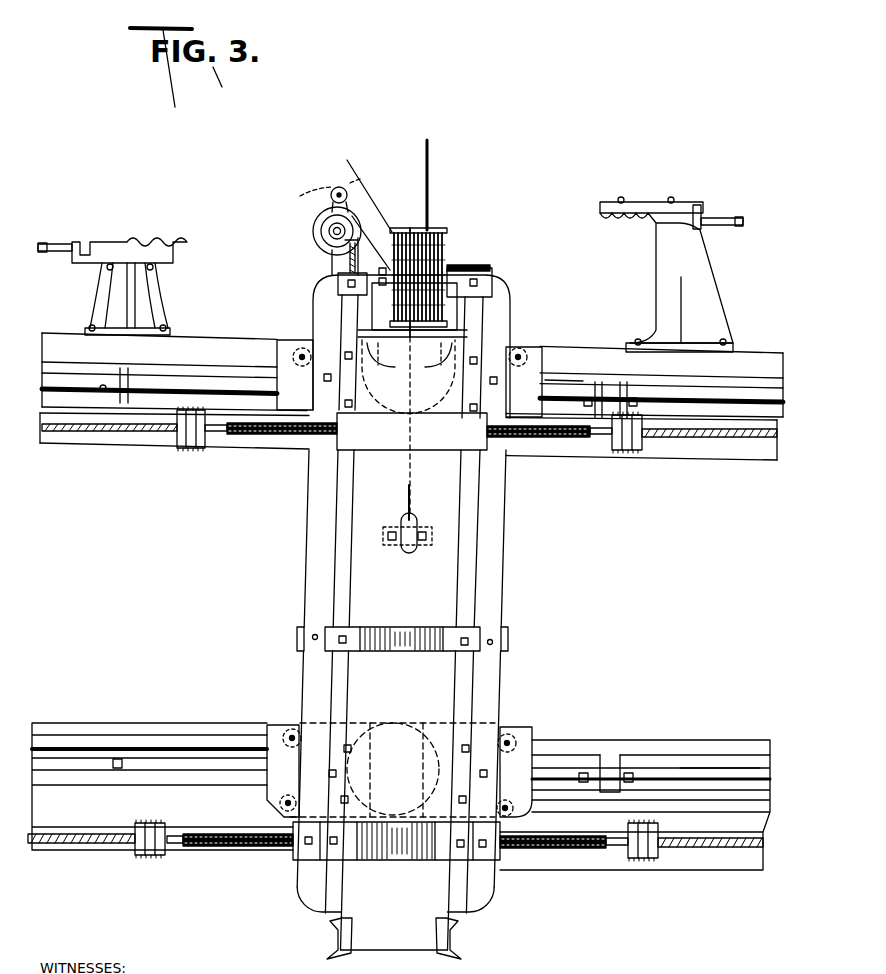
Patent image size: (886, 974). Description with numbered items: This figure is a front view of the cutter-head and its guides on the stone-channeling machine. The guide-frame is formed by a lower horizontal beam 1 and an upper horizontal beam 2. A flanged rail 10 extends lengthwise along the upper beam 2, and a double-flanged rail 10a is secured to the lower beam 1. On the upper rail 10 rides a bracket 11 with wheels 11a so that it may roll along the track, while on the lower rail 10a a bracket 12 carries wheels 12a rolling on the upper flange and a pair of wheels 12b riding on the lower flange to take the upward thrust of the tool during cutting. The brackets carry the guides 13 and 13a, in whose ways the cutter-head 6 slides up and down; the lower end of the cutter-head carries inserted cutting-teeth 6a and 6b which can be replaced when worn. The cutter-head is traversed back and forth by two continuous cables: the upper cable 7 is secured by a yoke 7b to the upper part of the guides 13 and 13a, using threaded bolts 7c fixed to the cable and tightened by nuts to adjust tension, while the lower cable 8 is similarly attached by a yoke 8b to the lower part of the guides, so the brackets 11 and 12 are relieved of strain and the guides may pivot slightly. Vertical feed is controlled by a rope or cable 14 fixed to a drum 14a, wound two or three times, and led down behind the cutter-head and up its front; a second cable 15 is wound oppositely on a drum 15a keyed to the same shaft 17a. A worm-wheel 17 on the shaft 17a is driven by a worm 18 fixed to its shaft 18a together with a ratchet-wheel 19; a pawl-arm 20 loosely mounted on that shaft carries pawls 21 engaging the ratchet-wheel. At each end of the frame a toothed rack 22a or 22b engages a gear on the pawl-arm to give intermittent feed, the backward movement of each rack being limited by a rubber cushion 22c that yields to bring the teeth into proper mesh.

The lower horizontal beam 1 is at (720, 862).
The upper horizontal beam 2 is at (752, 366).
The cutter-head 6 is at (402, 700).
The cutting-tooth 6a is at (450, 942).
The cutting-tooth 6b is at (416, 526).
The upper cable 7 is at (105, 442).
The yoke 7b is at (412, 431).
The threaded bolts 7c is at (282, 445).
The lower cable 8 is at (108, 843).
The yoke 8b is at (456, 851).
The flanged rail 10 is at (558, 382).
The double-flanged rail 10a is at (742, 768).
The bracket 11 is at (279, 333).
The wheels 11a is at (300, 345).
The bracket 12 is at (526, 750).
The wheels 12a is at (290, 733).
The wheels 12b is at (284, 806).
The guide 13 is at (490, 544).
The guide 13a is at (318, 535).
The rope or cable 14 is at (412, 232).
The drum 14a is at (361, 208).
The cable 15 is at (430, 182).
The drum 15a is at (446, 247).
The worm-wheel 17 is at (333, 256).
The shaft 17a is at (332, 268).
The worm 18 is at (326, 232).
The shaft 18a is at (342, 232).
The ratchet-wheel 19 is at (318, 222).
The pawl-arm 20 is at (330, 201).
The pawls 21 is at (337, 190).
The toothed rack 22a is at (174, 252).
The rack 22b is at (598, 223).
The rubber cushion 22c is at (86, 250).